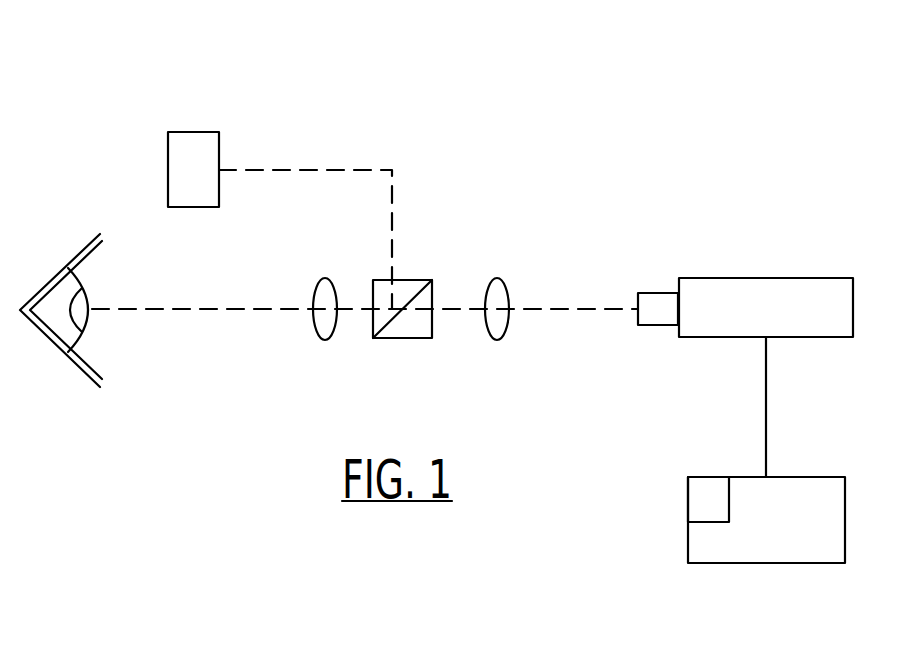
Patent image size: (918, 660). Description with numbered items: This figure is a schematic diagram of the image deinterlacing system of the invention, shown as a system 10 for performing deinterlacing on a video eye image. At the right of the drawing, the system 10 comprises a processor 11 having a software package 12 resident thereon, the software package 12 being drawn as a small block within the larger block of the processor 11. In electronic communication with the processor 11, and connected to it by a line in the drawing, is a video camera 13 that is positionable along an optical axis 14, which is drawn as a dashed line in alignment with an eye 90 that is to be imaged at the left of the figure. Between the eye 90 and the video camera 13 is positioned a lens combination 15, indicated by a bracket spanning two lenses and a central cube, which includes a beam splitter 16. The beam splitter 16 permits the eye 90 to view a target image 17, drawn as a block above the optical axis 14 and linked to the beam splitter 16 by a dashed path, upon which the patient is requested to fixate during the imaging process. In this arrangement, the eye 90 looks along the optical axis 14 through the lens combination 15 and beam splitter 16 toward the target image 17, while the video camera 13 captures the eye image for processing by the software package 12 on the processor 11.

The system 10 is at (80, 151).
The processor 11 is at (780, 535).
The software package 12 is at (723, 515).
The video camera 13 is at (767, 295).
The optical axis 14 is at (432, 303).
The lens combination 15 is at (406, 275).
The beam splitter 16 is at (407, 280).
The target image 17 is at (195, 152).
The eye 90 is at (72, 348).